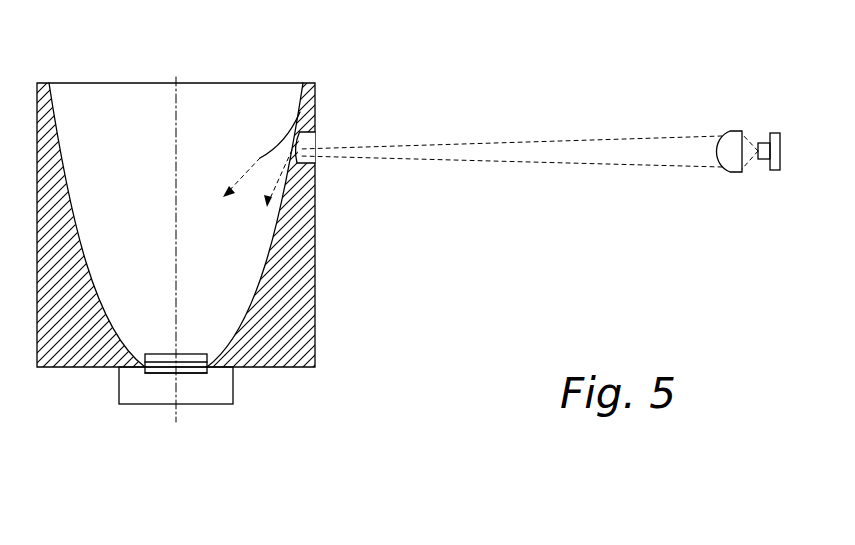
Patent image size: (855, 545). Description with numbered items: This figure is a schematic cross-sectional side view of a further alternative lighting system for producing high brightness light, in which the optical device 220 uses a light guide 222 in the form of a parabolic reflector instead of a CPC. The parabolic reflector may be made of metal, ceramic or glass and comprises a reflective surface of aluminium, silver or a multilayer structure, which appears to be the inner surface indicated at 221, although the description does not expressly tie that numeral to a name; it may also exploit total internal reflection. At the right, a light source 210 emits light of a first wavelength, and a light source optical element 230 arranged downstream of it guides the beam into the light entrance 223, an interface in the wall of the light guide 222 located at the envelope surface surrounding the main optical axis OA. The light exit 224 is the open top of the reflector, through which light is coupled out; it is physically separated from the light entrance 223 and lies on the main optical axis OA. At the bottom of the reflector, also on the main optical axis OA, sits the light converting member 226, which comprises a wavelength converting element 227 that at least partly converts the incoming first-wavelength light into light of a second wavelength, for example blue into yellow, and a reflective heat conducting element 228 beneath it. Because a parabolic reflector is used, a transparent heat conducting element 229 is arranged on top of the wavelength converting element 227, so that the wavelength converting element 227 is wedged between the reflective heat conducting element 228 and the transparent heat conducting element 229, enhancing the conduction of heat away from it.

The light source 210 is at (768, 167).
The optical device 220 is at (345, 272).
The reflective inner surface 221 is at (67, 196).
The light guide 222 is at (302, 257).
The light entrance 223 is at (313, 170).
The light exit 224 is at (163, 123).
The light converting member 226 is at (200, 363).
The wavelength converting element 227 is at (160, 375).
The reflective heat conducting element 228 is at (212, 392).
The transparent heat conducting element 229 is at (195, 358).
The light source optical element 230 is at (735, 131).
The main optical axis OA is at (172, 413).